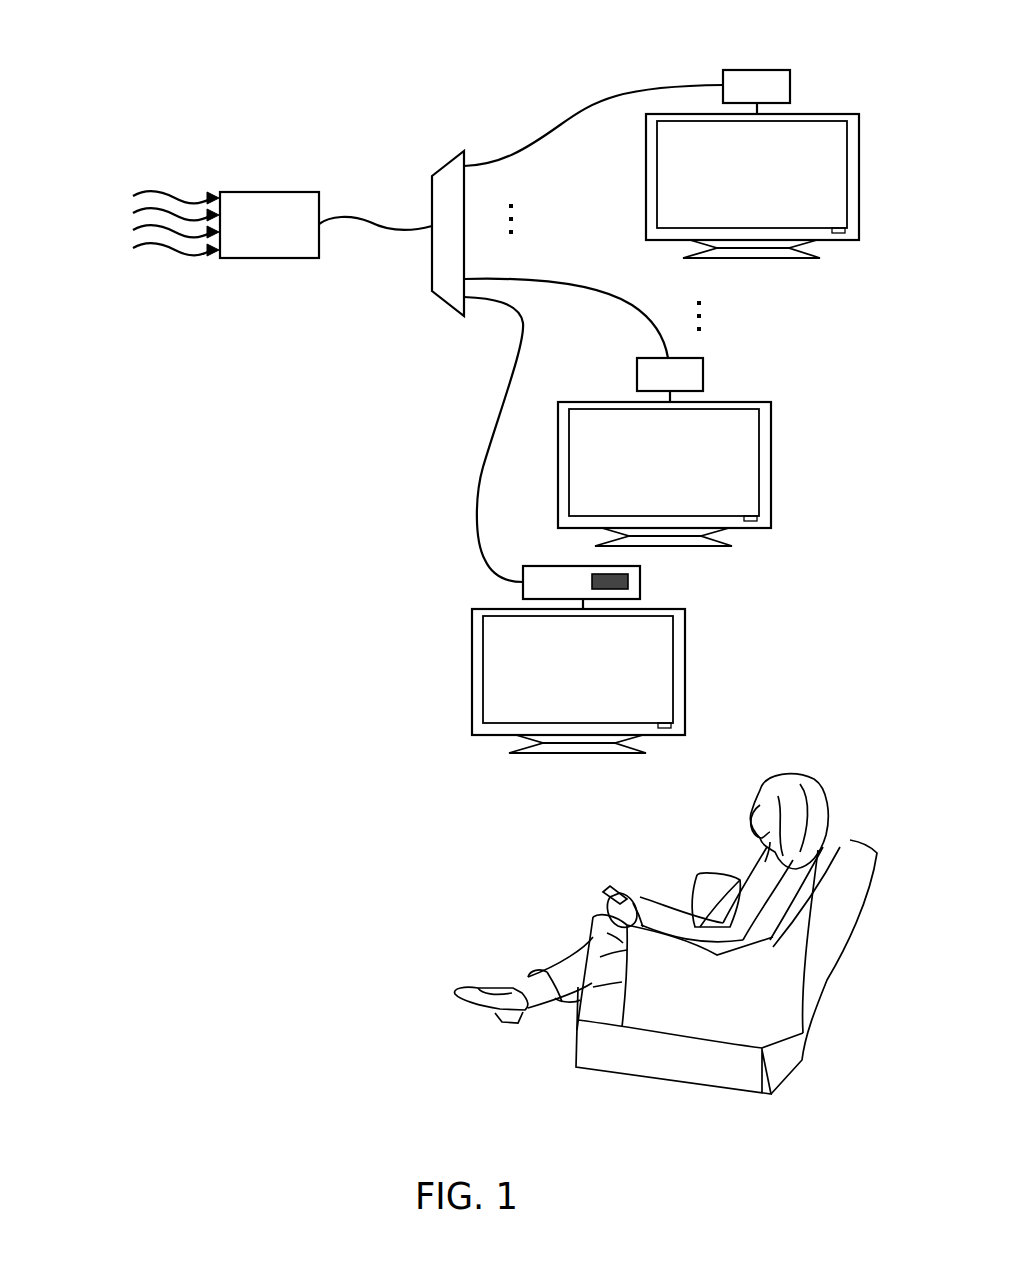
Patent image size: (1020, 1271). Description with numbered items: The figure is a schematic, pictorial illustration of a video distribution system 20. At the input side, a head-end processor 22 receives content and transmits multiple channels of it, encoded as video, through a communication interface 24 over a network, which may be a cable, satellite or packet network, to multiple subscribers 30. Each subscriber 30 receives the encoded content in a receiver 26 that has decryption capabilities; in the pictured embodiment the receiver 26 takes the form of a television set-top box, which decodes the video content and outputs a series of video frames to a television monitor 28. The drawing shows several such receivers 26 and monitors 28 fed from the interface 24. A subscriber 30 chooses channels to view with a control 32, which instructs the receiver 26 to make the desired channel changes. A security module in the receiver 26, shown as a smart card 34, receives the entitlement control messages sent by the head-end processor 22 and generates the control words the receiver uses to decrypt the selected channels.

The video distribution system 20 is at (162, 62).
The head-end processor 22 is at (268, 192).
The communication interface 24 is at (441, 175).
The receiver 26 is at (790, 82).
The television monitor 28 is at (848, 241).
The subscriber 30 is at (758, 806).
The control 32 is at (602, 894).
The smart card 34 is at (628, 581).